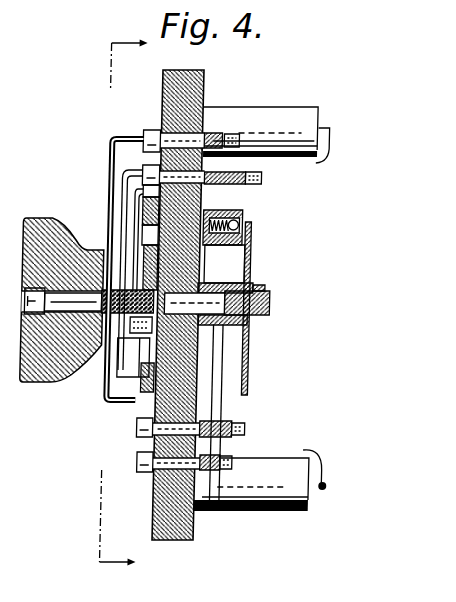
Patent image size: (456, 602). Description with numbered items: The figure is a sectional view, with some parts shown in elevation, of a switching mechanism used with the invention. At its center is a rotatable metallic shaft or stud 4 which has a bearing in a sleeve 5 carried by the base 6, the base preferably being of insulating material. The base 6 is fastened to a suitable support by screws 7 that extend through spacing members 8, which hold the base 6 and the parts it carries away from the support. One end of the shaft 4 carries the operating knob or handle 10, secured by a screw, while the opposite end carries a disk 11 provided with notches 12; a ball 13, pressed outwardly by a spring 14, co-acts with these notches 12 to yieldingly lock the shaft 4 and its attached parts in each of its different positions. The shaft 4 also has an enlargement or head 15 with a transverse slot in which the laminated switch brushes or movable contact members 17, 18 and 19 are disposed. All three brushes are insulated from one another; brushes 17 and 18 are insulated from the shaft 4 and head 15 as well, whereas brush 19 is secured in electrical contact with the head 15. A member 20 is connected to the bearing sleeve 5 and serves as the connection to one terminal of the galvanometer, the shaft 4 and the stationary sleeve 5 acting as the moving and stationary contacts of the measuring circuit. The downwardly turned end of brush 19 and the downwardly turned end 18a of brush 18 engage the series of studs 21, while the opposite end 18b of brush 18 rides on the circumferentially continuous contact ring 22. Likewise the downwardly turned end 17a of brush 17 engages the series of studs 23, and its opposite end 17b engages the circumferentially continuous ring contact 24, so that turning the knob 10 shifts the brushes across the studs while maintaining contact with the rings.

The shaft 4 is at (232, 292).
The sleeve 5 is at (210, 300).
The base 6 is at (206, 85).
The screws 7 is at (138, 522).
The members 8 is at (272, 116).
The operating knob 10 is at (48, 220).
The disk 11 is at (258, 300).
The notches 12 is at (256, 232).
The ball 13 is at (248, 222).
The spring 14 is at (236, 216).
The head 15 is at (120, 280).
The switch brush 17 is at (112, 230).
The downwardly turned end of brush 17 17a is at (127, 137).
The opposite end of brush 17 17b is at (118, 405).
The switch brush 18 is at (129, 195).
The downwardly turned end of brush 18 18a is at (126, 165).
The opposite end of brush 18 18b is at (118, 402).
The switch brush 19 is at (215, 217).
The member 20 is at (229, 420).
The studs 21 is at (125, 143).
The contact ring 22 is at (122, 205).
The studs 23 is at (143, 132).
The ring contact 24 is at (140, 190).